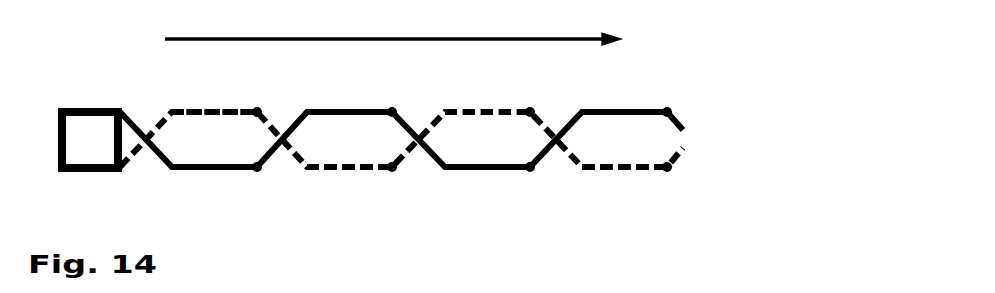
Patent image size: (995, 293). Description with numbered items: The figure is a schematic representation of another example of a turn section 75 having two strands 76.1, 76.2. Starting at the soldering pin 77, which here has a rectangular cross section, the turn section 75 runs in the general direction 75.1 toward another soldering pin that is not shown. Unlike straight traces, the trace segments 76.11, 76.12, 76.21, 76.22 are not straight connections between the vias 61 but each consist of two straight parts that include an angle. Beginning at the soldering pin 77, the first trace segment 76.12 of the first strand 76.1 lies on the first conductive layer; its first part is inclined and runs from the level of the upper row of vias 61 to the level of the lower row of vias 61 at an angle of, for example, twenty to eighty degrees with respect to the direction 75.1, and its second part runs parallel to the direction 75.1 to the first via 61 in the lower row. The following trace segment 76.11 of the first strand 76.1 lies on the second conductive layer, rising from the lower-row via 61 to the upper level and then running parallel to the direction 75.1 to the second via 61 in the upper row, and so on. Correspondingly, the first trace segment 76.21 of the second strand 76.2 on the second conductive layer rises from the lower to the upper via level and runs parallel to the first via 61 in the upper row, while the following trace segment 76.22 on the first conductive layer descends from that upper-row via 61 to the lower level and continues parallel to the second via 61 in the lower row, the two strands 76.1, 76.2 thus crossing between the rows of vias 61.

The turn section 75 is at (727, 84).
The general direction 75.1 is at (498, 37).
The soldering pin 77 is at (80, 108).
The first strand 76.1 is at (673, 118).
The second strand 76.2 is at (673, 166).
The trace segment 76.11 is at (342, 112).
The trace segment 76.12 is at (220, 172).
The trace segment 76.21 is at (220, 112).
The trace segment 76.22 is at (342, 172).
The via 61 is at (258, 110).